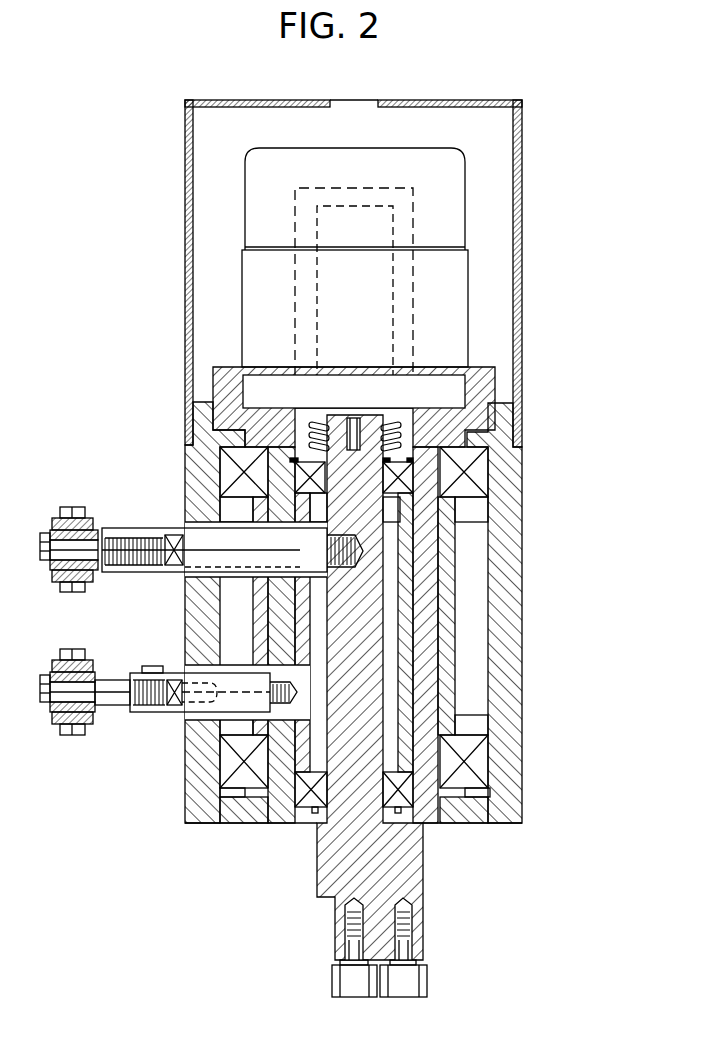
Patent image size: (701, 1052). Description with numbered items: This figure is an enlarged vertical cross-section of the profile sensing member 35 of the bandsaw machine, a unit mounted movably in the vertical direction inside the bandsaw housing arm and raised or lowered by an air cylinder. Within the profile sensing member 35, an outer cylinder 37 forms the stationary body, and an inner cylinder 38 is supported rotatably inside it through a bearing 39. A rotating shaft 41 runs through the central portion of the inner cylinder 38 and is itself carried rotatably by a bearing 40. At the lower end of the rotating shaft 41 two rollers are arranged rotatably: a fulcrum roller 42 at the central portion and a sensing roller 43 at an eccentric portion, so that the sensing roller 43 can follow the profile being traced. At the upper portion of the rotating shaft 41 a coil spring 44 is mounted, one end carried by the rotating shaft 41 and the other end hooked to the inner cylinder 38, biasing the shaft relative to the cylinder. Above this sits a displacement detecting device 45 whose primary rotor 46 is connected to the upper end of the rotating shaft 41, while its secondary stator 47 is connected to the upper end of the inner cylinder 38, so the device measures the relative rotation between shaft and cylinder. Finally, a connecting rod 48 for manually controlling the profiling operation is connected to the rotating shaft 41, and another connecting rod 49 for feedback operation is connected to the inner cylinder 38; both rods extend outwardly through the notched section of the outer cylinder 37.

The profile sensing member 35 is at (517, 425).
The outer cylinder 37 is at (513, 617).
The inner cylinder 38 is at (427, 555).
The bearing 39 is at (242, 775).
The bearing 40 is at (308, 800).
The rotating shaft 41 is at (368, 703).
The fulcrum roller 42 is at (352, 985).
The sensing roller 43 is at (405, 985).
The coil spring 44 is at (457, 417).
The displacement detecting device 45 is at (457, 295).
The primary rotor 46 is at (375, 226).
The secondary stator 47 is at (413, 202).
The connecting rod 48 is at (128, 527).
The connecting rod 49 is at (148, 713).